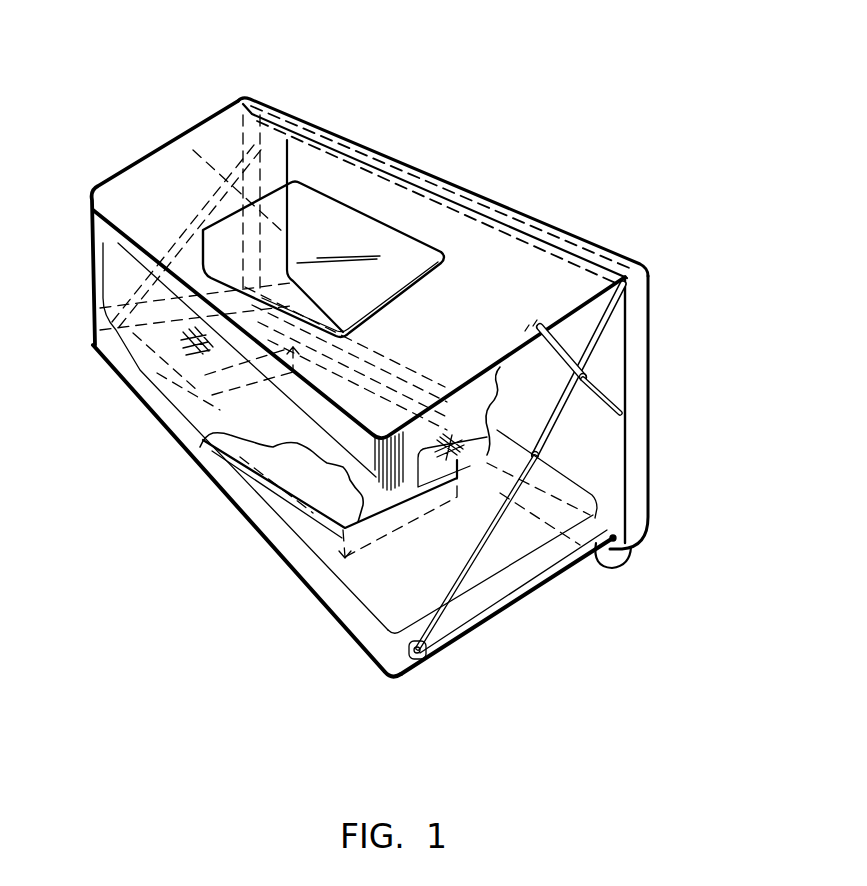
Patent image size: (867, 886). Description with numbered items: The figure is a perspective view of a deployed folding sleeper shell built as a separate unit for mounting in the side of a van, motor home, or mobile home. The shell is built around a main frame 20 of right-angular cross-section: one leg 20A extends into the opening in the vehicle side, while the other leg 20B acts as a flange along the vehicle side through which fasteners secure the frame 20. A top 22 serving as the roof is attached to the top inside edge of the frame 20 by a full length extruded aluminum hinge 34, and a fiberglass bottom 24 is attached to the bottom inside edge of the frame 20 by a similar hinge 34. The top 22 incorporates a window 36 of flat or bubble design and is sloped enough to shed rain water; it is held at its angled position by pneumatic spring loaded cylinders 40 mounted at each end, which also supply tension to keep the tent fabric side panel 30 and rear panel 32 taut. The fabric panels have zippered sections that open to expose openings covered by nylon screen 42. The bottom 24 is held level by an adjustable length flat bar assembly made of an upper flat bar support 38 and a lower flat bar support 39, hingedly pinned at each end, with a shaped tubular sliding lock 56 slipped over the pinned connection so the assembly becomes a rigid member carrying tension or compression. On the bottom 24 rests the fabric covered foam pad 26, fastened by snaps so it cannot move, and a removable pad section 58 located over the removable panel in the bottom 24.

The main frame 20 is at (292, 126).
The leg 20A is at (573, 232).
The leg 20B is at (645, 300).
The top 22 is at (378, 197).
The bottom 24 is at (297, 584).
The pad 26 is at (280, 528).
The side panel 30 is at (167, 373).
The rear panel 32 is at (478, 392).
The hinge 34 is at (468, 200).
The window 36 is at (308, 214).
The upper flat bar support 38 is at (540, 430).
The lower flat bar support 39 is at (437, 624).
The pneumatic spring loaded cylinder 40 is at (603, 388).
The nylon screen 42 is at (200, 362).
The tubular sliding lock 56 is at (523, 497).
The pad section 58 is at (300, 462).